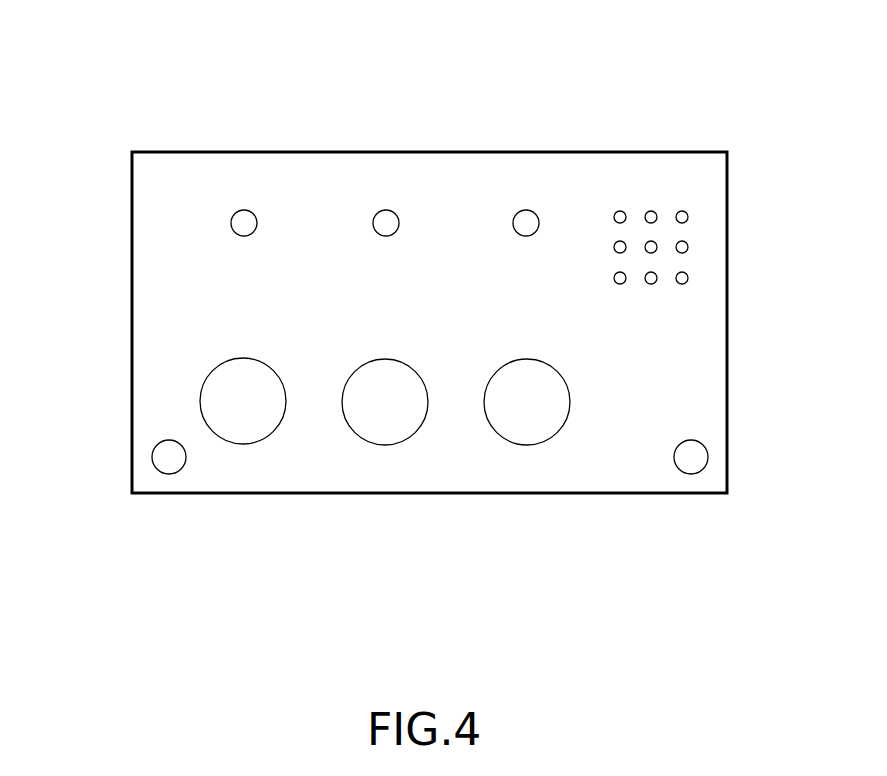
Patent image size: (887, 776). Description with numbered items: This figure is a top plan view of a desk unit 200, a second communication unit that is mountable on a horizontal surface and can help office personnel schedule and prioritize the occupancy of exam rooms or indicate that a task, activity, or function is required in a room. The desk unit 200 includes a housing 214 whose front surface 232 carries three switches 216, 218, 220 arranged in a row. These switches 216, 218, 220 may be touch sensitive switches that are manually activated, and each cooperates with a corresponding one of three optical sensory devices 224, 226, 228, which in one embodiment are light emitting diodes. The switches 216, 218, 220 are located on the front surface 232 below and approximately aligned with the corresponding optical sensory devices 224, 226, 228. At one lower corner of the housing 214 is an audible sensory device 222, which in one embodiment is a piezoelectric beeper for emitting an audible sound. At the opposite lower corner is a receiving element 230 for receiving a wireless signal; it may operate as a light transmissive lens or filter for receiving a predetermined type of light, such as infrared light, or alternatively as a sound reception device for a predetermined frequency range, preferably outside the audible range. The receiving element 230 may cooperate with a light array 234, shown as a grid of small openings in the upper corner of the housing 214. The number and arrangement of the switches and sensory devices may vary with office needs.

The desk unit 200 is at (428, 288).
The housing 214 is at (727, 316).
The switch 216 is at (237, 445).
The switch 218 is at (380, 445).
The switch 220 is at (520, 445).
The audible sensory device 222 is at (155, 442).
The optical sensory device 224 is at (244, 210).
The optical sensory device 226 is at (386, 210).
The optical sensory device 228 is at (526, 210).
The receiving element 230 is at (700, 440).
The front surface 232 is at (418, 308).
The light array 234 is at (651, 210).